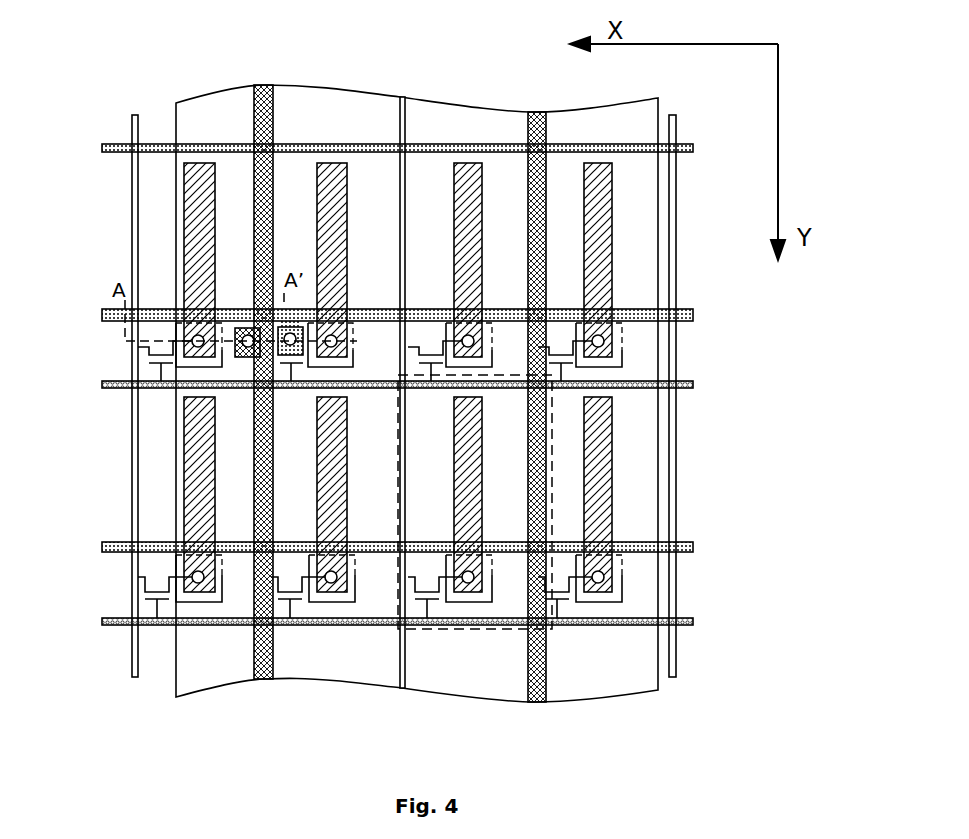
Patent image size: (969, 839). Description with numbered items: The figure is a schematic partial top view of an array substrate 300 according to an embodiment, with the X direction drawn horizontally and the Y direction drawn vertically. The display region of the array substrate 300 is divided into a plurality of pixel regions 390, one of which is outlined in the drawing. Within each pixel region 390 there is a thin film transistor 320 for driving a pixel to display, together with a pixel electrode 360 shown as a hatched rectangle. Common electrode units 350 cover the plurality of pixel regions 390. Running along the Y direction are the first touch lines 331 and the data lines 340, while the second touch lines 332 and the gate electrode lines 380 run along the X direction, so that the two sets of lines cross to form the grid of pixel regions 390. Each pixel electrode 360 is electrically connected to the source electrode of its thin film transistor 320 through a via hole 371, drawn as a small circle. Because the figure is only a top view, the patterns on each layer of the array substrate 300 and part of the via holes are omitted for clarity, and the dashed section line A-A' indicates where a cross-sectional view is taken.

The array substrate 300 is at (157, 42).
The thin film transistor 320 is at (150, 365).
The first touch line 331 is at (272, 85).
The second touch line 332 is at (693, 313).
The data line 340 is at (677, 188).
The common electrode unit 350 is at (610, 128).
The pixel electrode 360 is at (185, 247).
The via hole 371 is at (195, 338).
The gate electrode line 380 is at (693, 383).
The pixel region 390 is at (487, 630).